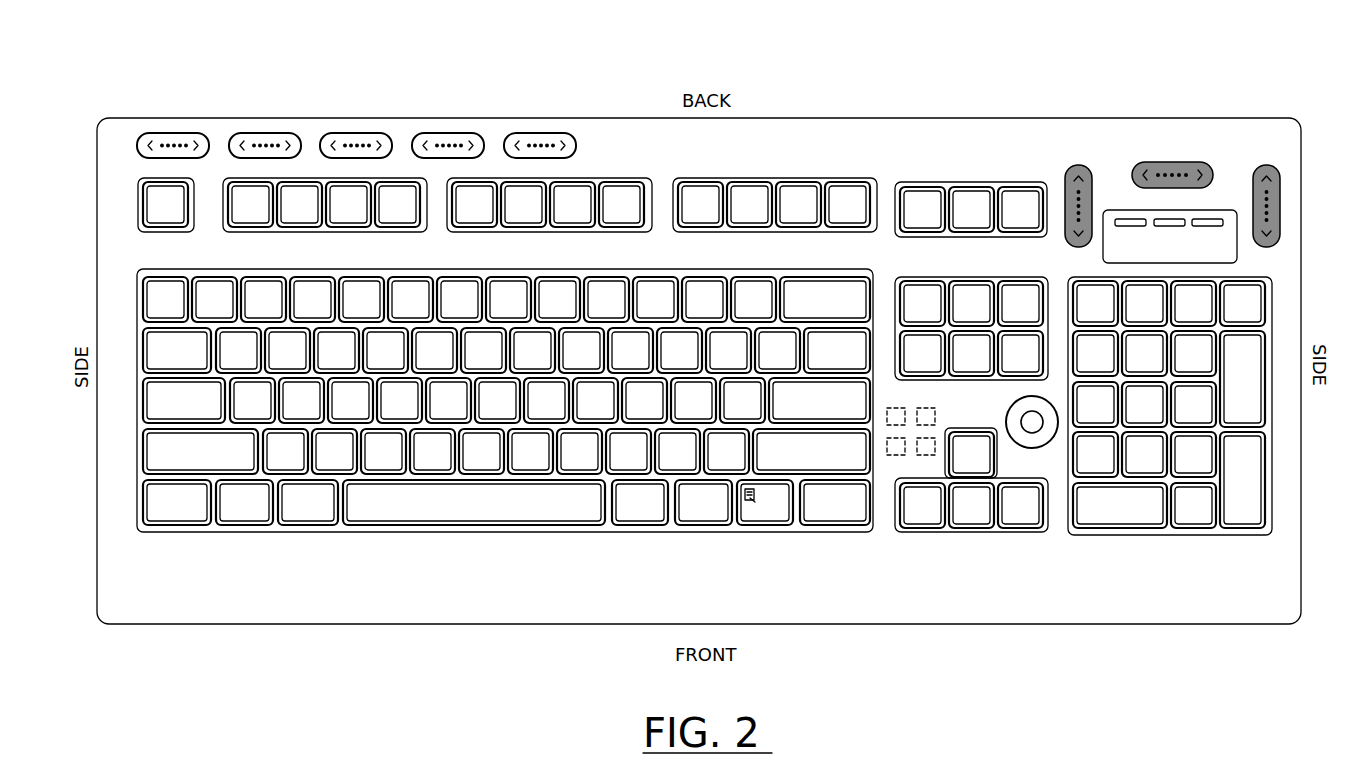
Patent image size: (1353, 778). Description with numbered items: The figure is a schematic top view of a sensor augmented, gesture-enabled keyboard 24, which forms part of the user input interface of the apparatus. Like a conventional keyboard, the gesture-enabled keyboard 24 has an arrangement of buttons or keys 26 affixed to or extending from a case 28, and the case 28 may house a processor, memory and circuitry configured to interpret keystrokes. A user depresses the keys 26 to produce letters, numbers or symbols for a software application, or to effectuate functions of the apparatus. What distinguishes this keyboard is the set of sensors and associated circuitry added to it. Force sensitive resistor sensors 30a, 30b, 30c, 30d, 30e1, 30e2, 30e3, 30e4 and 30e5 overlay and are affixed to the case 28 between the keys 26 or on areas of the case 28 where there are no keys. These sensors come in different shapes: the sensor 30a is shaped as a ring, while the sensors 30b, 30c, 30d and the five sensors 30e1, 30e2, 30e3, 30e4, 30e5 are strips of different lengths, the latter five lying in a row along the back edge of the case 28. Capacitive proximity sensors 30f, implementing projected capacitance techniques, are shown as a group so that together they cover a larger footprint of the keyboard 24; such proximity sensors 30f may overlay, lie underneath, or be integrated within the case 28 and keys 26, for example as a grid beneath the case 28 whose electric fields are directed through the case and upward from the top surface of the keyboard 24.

The gesture-enabled keyboard 24 is at (701, 35).
The case 28 is at (885, 128).
The keys 26 is at (856, 186).
The force sensitive resistor sensor 30e1 is at (173, 133).
The force sensitive resistor sensor 30e2 is at (264, 133).
The force sensitive resistor sensor 30e3 is at (356, 133).
The force sensitive resistor sensor 30e4 is at (448, 133).
The force sensitive resistor sensor 30e5 is at (540, 133).
The force sensitive resistor sensor 30b is at (1065, 176).
The force sensitive resistor sensor 30c is at (1170, 162).
The force sensitive resistor sensor 30d is at (1270, 168).
The capacitive proximity sensors 30f is at (946, 410).
The force sensitive resistor sensor 30a is at (1050, 447).